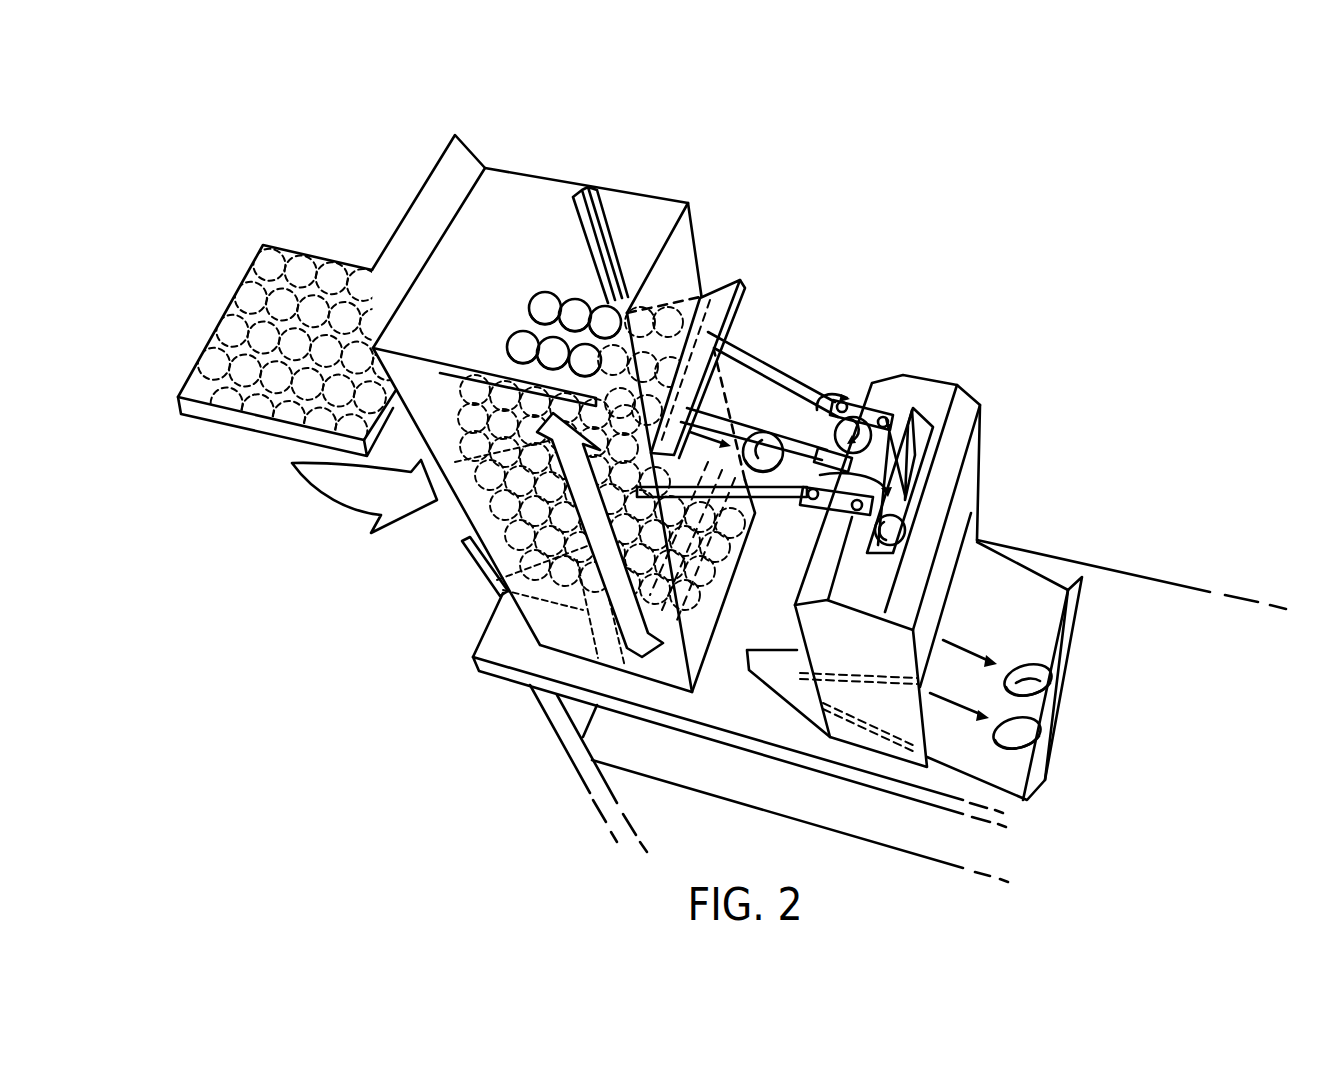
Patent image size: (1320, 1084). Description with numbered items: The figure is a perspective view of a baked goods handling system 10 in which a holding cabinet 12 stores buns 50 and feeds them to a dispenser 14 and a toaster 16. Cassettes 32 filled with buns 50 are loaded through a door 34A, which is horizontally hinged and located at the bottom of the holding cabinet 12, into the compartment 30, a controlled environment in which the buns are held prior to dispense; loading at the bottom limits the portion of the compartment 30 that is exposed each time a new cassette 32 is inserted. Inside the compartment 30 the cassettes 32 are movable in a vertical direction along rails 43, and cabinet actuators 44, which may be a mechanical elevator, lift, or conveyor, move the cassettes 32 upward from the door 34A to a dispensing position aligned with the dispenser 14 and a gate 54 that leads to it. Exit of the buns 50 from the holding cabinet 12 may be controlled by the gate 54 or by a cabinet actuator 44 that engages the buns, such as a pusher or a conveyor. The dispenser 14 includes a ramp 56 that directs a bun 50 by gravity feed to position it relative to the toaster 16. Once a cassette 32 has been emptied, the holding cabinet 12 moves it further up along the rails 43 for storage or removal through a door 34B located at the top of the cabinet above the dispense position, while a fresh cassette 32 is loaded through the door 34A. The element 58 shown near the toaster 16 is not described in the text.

The loading system 10 is at (750, 182).
The hopper 12 is at (517, 183).
The pusher arm 14 is at (753, 388).
The dispenser block 16 is at (927, 390).
The hopper side wall 30 is at (650, 222).
The supply tray 32 is at (215, 410).
The lower guide plate 34A is at (468, 550).
The upper guide plate 34B is at (460, 158).
The feed channel 43 is at (602, 204).
The feed direction 44 is at (620, 615).
The pellets 50 is at (289, 253).
The gate plate 54 is at (727, 293).
The hopper front wall 56 is at (693, 473).
The separator blade 58 is at (910, 447).